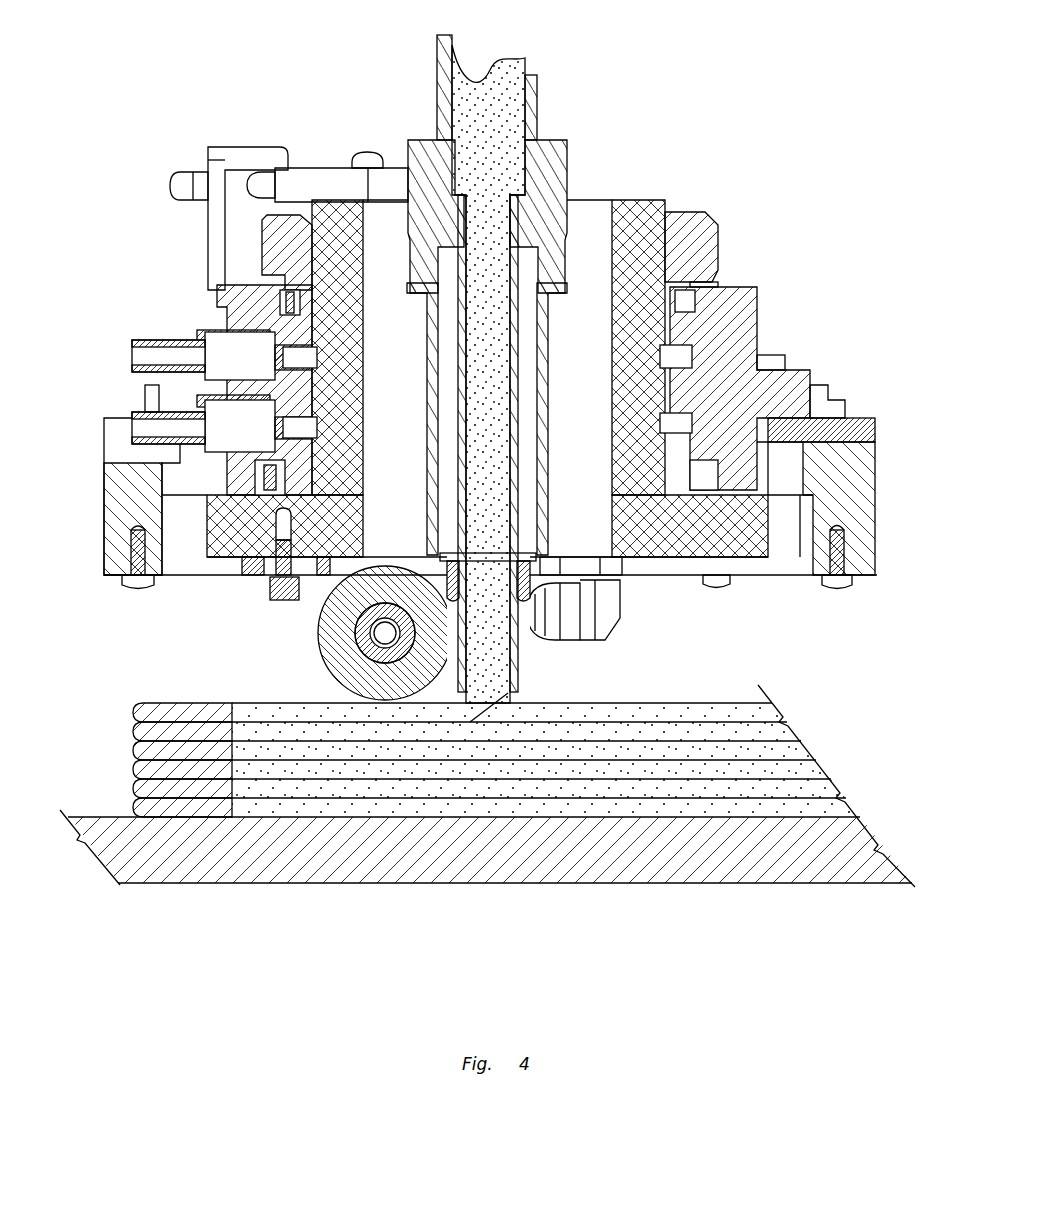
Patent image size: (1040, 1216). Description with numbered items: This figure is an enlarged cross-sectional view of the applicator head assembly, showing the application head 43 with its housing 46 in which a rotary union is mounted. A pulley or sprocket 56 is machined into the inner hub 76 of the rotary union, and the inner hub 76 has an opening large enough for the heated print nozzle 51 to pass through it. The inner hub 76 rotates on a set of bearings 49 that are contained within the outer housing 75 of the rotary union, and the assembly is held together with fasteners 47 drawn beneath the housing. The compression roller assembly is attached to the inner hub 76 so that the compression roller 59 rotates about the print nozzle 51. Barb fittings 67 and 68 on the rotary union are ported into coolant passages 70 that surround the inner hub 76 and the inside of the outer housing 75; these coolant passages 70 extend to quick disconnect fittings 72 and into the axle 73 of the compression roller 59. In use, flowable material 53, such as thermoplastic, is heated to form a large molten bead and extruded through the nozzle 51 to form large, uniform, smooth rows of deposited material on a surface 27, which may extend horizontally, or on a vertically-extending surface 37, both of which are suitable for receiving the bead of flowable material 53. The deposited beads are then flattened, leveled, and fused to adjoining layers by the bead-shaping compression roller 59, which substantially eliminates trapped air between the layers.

The application head 43 is at (804, 238).
The housing 46 is at (880, 480).
The fastener bolt 47 is at (263, 580).
The bearings 49 is at (760, 425).
The print nozzle 51 is at (432, 140).
The flowable material 53 is at (503, 65).
The pulley or sprocket 56 is at (768, 528).
The compression roller 59 is at (323, 650).
The barb fitting 67 is at (132, 422).
The barb fitting 68 is at (132, 358).
The coolant passages 70 is at (697, 362).
The quick disconnect fittings 72 is at (603, 615).
The axle 73 is at (318, 622).
The outer housing 75 is at (247, 285).
The inner hub 76 is at (633, 200).
The surface 27 is at (487, 801).
The vertically-extending surface 37 is at (615, 883).